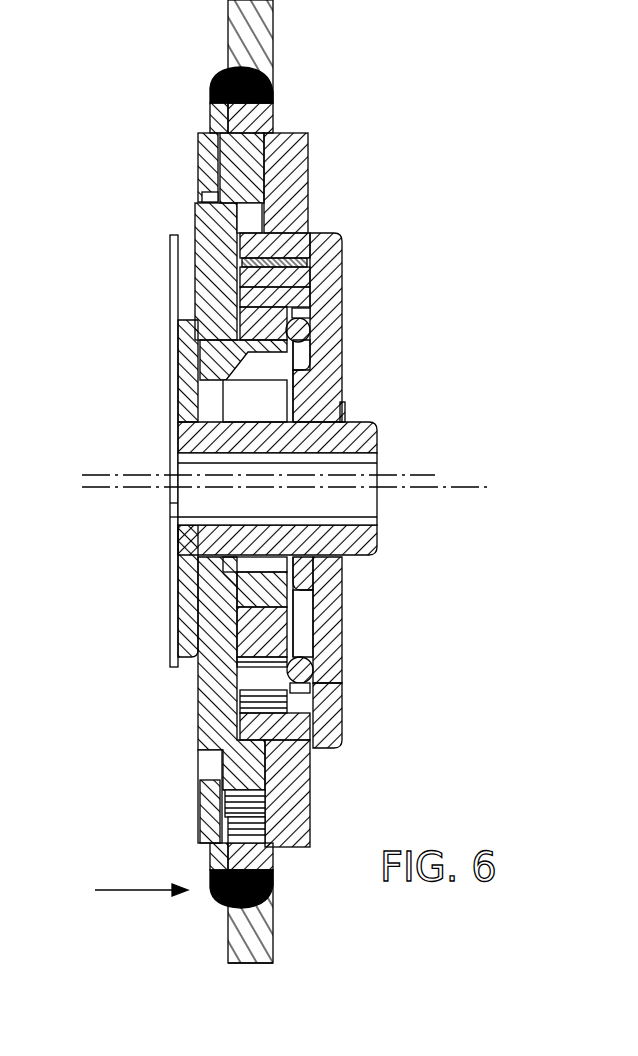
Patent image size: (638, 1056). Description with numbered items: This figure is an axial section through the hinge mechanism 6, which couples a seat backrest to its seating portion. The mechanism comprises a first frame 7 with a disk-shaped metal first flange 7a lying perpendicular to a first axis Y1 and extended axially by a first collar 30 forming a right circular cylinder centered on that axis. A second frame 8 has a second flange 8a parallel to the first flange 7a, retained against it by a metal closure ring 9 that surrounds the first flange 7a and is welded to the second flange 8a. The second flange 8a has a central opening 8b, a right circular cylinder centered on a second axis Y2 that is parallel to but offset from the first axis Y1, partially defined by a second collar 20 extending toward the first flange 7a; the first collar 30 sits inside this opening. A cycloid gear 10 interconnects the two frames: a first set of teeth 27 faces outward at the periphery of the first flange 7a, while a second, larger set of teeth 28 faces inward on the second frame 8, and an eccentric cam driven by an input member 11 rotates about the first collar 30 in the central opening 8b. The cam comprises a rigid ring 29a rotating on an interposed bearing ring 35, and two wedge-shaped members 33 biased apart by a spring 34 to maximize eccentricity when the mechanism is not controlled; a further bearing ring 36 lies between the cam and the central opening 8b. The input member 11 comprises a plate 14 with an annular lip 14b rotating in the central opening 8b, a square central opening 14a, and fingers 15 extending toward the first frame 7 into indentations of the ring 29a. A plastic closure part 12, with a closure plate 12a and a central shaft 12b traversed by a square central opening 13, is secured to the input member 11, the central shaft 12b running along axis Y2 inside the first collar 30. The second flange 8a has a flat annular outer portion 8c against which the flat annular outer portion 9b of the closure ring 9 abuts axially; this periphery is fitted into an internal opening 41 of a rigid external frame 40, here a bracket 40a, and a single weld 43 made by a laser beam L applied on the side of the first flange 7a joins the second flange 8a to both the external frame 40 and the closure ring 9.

The hinge mechanism 6 is at (428, 156).
The first frame 7 is at (186, 746).
The first flange 7a is at (220, 698).
The second frame 8 is at (322, 797).
The second flange 8a is at (300, 762).
The central opening 8b is at (305, 233).
The flat annular outer portion 8c is at (247, 116).
The closure ring 9 is at (207, 163).
The flat annular outer portion 9b is at (218, 117).
The cycloid gear 10 is at (212, 845).
The input member 11 is at (350, 337).
The closure part 12 is at (170, 576).
The closure plate 12a is at (192, 375).
The central shaft 12b is at (235, 530).
The central opening 13 is at (363, 518).
The plate 14 is at (327, 373).
The central opening 14a is at (343, 402).
The annular lip 14b is at (343, 683).
The fingers 15 is at (283, 280).
The second collar 20 is at (262, 252).
The first circular set of teeth 27 is at (240, 803).
The second circular set of teeth 28 is at (272, 873).
The rigid ring 29a is at (200, 340).
The first collar 30 is at (247, 583).
The wedge-shaped members 33 is at (313, 667).
The spring 34 is at (285, 297).
The ring 35 is at (282, 600).
The ring 36 is at (250, 265).
The external frame 40 is at (280, 953).
The bracket 40a is at (250, 955).
The internal opening 41 is at (272, 907).
The weld 43 is at (218, 73).
The first axis Y1 is at (410, 470).
The second axis Y2 is at (463, 484).
The laser beam L is at (141, 915).